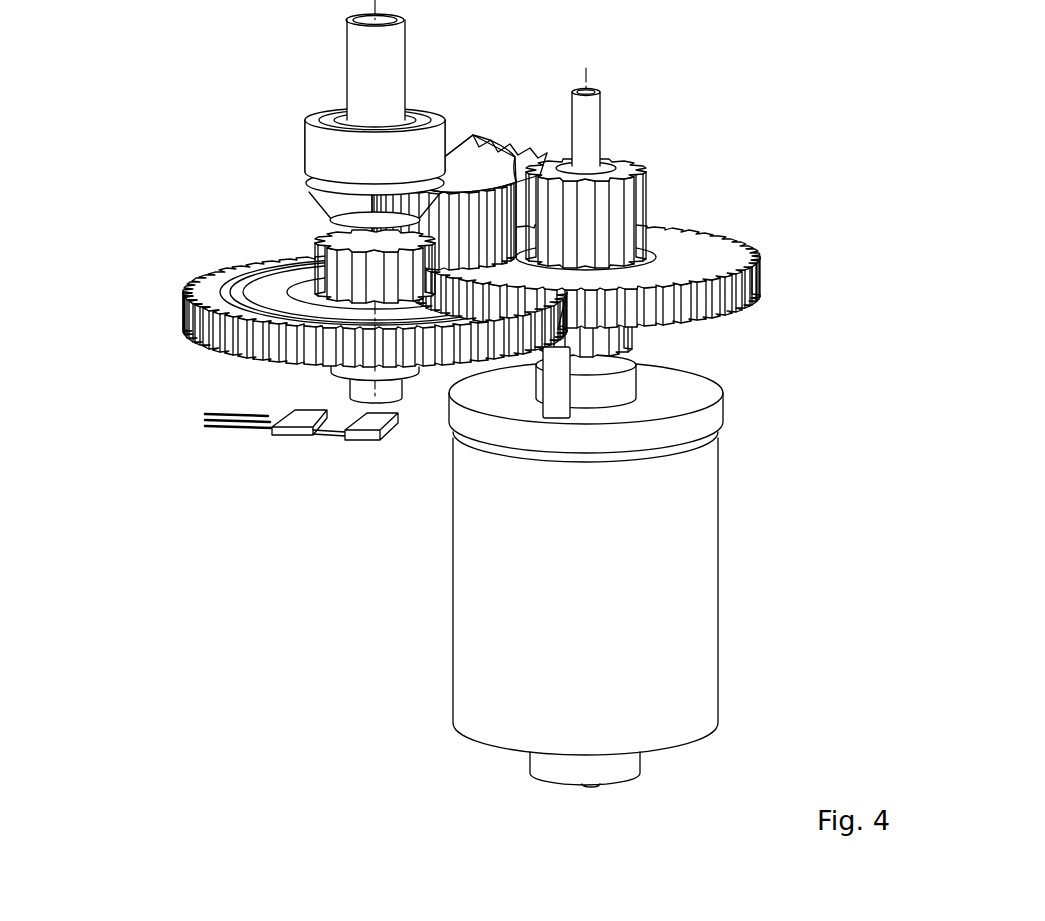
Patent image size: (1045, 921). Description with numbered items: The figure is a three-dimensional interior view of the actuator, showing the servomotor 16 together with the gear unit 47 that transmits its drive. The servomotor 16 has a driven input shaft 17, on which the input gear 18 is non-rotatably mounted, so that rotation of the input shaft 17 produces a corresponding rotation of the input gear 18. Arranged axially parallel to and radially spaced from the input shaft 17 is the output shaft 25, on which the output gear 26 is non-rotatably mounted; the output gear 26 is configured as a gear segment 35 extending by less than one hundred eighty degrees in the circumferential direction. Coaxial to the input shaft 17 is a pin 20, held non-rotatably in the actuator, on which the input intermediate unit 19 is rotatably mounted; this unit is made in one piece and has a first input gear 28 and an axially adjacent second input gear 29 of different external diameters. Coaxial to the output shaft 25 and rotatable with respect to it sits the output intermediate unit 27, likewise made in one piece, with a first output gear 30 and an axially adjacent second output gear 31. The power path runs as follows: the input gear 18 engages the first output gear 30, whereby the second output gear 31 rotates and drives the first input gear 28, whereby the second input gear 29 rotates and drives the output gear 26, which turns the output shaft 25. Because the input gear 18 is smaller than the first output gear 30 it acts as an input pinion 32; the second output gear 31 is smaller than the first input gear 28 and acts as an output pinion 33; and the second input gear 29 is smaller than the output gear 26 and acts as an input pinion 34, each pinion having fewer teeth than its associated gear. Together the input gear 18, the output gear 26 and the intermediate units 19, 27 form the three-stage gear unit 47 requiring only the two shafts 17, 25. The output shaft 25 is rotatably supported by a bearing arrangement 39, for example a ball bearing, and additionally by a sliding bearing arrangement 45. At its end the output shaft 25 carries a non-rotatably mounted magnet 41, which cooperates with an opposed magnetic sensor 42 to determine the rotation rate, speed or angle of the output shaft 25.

The servomotor 16 is at (705, 546).
The input shaft 17 is at (592, 360).
The input gear 18 is at (659, 334).
The input pinion 32 is at (612, 340).
The input intermediate unit 19 is at (629, 257).
The pin 20 is at (601, 113).
The output shaft 25 is at (353, 47).
The output gear 26 is at (462, 165).
The gear segment 35 is at (498, 142).
The output intermediate unit 27 is at (332, 292).
The first input gear 28 is at (763, 276).
The second input gear 29 is at (648, 213).
The input pinion 34 is at (644, 187).
The first output gear 30 is at (186, 305).
The second output gear 31 is at (314, 250).
The output pinion 33 is at (314, 237).
The bearing arrangement 39 is at (318, 145).
The magnet 41 is at (390, 396).
The magnetic sensor 42 is at (397, 440).
The bearing arrangement 45 is at (347, 377).
The gear unit 47 is at (466, 393).